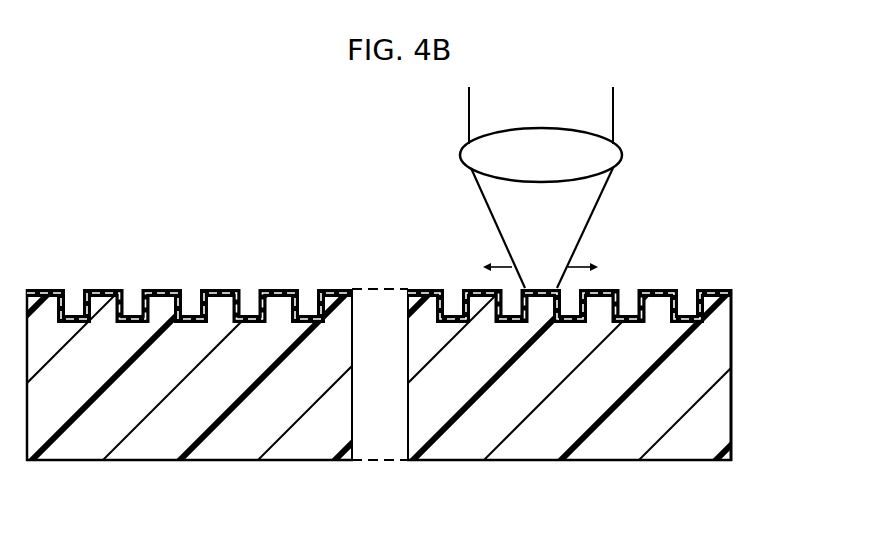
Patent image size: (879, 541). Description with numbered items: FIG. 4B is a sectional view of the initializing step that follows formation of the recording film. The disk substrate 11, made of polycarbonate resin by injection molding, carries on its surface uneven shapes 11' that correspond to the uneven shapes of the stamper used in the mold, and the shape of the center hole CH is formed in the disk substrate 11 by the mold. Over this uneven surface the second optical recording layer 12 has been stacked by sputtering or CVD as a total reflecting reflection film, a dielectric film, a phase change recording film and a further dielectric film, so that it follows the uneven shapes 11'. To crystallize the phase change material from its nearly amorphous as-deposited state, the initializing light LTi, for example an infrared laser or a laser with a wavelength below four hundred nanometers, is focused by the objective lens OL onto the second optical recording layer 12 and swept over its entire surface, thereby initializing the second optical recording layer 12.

The disk substrate 11 is at (439, 375).
The second optical recording layer 12 is at (732, 293).
The uneven shapes 11' is at (580, 398).
The center hole CH is at (408, 410).
The objective lens OL is at (622, 146).
The initializing light LTi is at (597, 202).